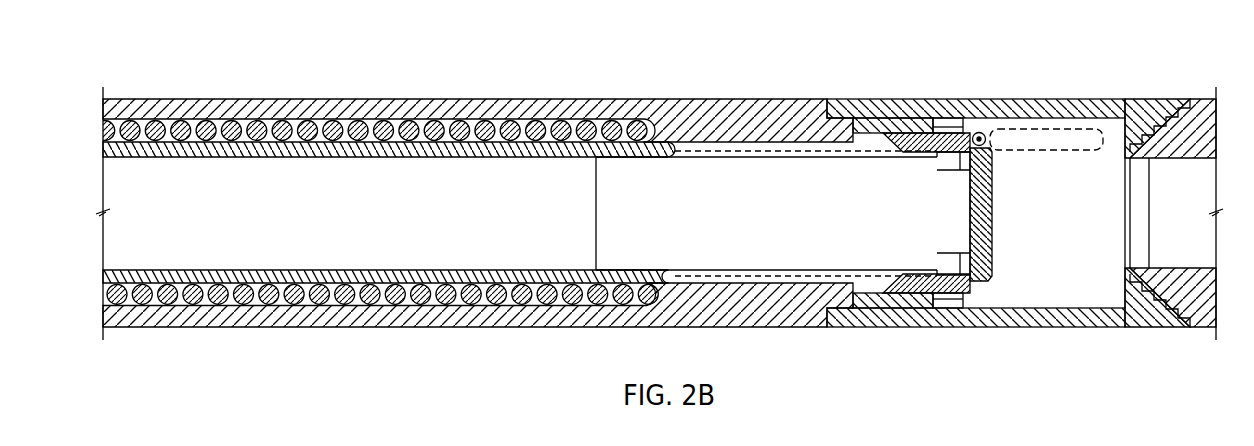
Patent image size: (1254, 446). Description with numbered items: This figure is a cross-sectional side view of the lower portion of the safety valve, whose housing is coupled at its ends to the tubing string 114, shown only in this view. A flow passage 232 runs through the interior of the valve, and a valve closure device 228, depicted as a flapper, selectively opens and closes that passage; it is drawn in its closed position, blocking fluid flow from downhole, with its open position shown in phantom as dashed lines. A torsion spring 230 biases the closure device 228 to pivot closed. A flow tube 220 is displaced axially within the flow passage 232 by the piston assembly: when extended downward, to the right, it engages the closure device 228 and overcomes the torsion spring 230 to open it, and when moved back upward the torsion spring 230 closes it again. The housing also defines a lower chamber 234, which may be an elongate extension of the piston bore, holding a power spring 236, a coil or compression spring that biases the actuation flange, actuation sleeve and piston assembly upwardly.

The tubing string 114 is at (1207, 99).
The flow tube 220 is at (353, 158).
The valve closure device 228 is at (988, 202).
The torsion spring 230 is at (981, 132).
The flow passage 232 is at (808, 214).
The lower chamber 234 is at (223, 122).
The power spring 236 is at (308, 127).